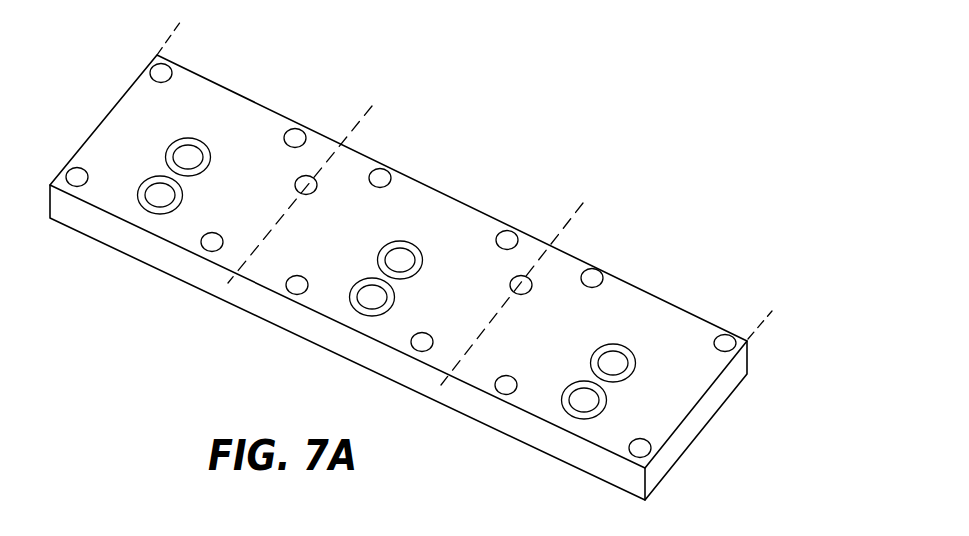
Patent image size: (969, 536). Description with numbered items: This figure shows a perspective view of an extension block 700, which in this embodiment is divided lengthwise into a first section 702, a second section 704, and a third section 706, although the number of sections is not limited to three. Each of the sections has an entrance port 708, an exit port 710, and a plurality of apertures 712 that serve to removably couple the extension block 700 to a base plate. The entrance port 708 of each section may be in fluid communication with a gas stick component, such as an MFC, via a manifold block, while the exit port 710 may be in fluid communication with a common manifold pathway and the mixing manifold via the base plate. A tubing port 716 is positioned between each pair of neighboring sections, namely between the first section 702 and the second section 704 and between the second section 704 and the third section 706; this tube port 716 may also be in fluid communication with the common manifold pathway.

The extension block 700 is at (524, 77).
The first section 702 is at (357, 123).
The second section 704 is at (566, 226).
The third section 706 is at (763, 318).
The entrance port 708 is at (183, 155).
The exit port 710 is at (157, 196).
The apertures 712 is at (304, 134).
The tubing port 716 is at (304, 182).